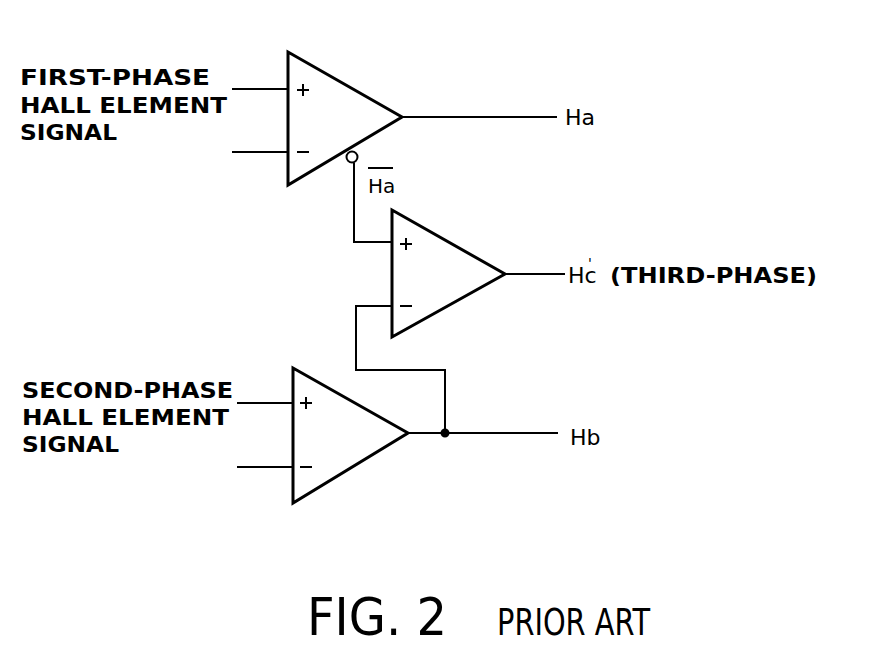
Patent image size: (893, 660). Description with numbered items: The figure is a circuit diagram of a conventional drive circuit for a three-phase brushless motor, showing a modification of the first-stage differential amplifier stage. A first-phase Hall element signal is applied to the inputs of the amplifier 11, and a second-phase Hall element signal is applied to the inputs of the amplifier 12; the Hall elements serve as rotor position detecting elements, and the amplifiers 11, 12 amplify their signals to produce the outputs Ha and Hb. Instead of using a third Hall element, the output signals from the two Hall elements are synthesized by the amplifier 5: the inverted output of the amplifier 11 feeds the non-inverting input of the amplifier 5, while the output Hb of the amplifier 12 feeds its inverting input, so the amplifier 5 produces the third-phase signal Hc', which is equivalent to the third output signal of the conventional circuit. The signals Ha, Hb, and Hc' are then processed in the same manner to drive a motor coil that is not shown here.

The amplifier 11 is at (349, 81).
The amplifier 12 is at (365, 460).
The amplifier 5 is at (455, 243).